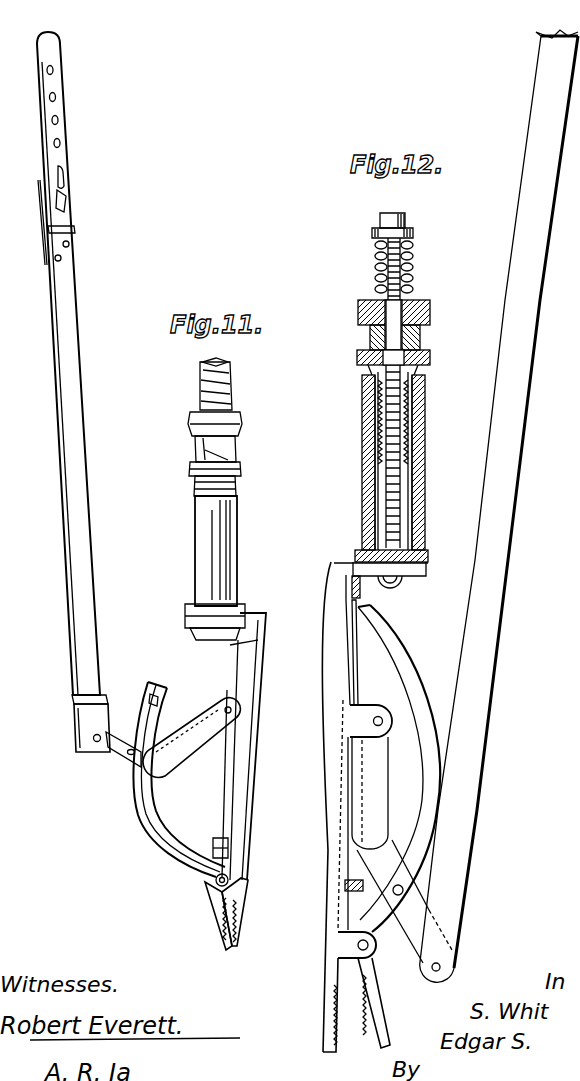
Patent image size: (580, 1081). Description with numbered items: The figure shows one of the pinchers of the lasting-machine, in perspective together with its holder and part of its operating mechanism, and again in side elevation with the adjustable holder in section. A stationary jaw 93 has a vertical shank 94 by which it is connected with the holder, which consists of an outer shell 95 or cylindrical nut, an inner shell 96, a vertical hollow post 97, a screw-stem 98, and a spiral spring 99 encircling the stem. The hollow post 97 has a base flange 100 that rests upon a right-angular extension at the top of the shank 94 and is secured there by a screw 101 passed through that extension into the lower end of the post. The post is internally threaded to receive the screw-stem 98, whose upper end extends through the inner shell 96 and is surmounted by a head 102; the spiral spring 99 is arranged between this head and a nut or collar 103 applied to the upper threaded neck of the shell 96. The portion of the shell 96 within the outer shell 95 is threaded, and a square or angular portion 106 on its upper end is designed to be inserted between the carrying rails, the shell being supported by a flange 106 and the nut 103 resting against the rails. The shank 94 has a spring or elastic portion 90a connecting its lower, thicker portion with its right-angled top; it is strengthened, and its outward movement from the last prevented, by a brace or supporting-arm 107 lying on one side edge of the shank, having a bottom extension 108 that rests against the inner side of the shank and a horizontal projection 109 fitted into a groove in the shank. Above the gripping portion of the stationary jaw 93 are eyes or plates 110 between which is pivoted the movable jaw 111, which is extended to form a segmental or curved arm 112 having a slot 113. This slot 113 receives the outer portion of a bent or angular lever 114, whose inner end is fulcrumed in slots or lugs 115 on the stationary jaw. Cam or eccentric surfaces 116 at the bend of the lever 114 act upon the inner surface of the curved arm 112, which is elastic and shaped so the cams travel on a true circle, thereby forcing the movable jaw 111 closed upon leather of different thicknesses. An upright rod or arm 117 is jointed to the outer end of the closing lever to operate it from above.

In FIG. 12, the spring or elastic portion 90a is at (352, 670).
In FIG. 11, the stationary jaw 93 is at (241, 912).
In FIG. 12, the stationary jaw 93 is at (326, 995).
In FIG. 11, the vertical shank 94 is at (244, 746).
In FIG. 12, the vertical shank 94 is at (328, 846).
In FIG. 11, the outer shell or cylindrical nut 95 is at (220, 558).
In FIG. 12, the outer shell or cylindrical nut 95 is at (425, 438).
In FIG. 12, the inner shell 96 is at (363, 517).
In FIG. 12, the vertical hollow post 97 is at (402, 526).
In FIG. 12, the screw-stem 98 is at (422, 362).
In FIG. 12, the spiral spring 99 is at (406, 269).
In FIG. 12, the base flange 100 is at (428, 554).
In FIG. 12, the screw 101 is at (398, 579).
In FIG. 12, the head 102 is at (414, 233).
In FIG. 12, the nut or collar 103 is at (430, 318).
In FIG. 11, the square or angular portion 106 is at (236, 446).
In FIG. 12, the brace or supporting-arm 107 is at (330, 636).
In FIG. 12, the bottom extension 108 is at (345, 886).
In FIG. 12, the horizontal projection 109 is at (368, 587).
In FIG. 11, the eyes or plates 110 is at (230, 862).
In FIG. 12, the eyes or plates 110 is at (353, 944).
In FIG. 11, the movable jaw 111 is at (210, 905).
In FIG. 12, the movable jaw 111 is at (378, 992).
In FIG. 11, the segmental or curved arm 112 is at (179, 769).
In FIG. 12, the segmental or curved arm 112 is at (430, 765).
In FIG. 11, the slot 113 is at (149, 698).
In FIG. 11, the bent or angular lever 114 is at (129, 760).
In FIG. 12, the bent or angular lever 114 is at (428, 904).
In FIG. 11, the slots or lugs 115 is at (220, 704).
In FIG. 12, the slots or lugs 115 is at (377, 707).
In FIG. 12, the cam or eccentric surfaces 116 is at (371, 802).
In FIG. 11, the upright rod or arm 117 is at (90, 520).
In FIG. 12, the upright rod or arm 117 is at (500, 632).